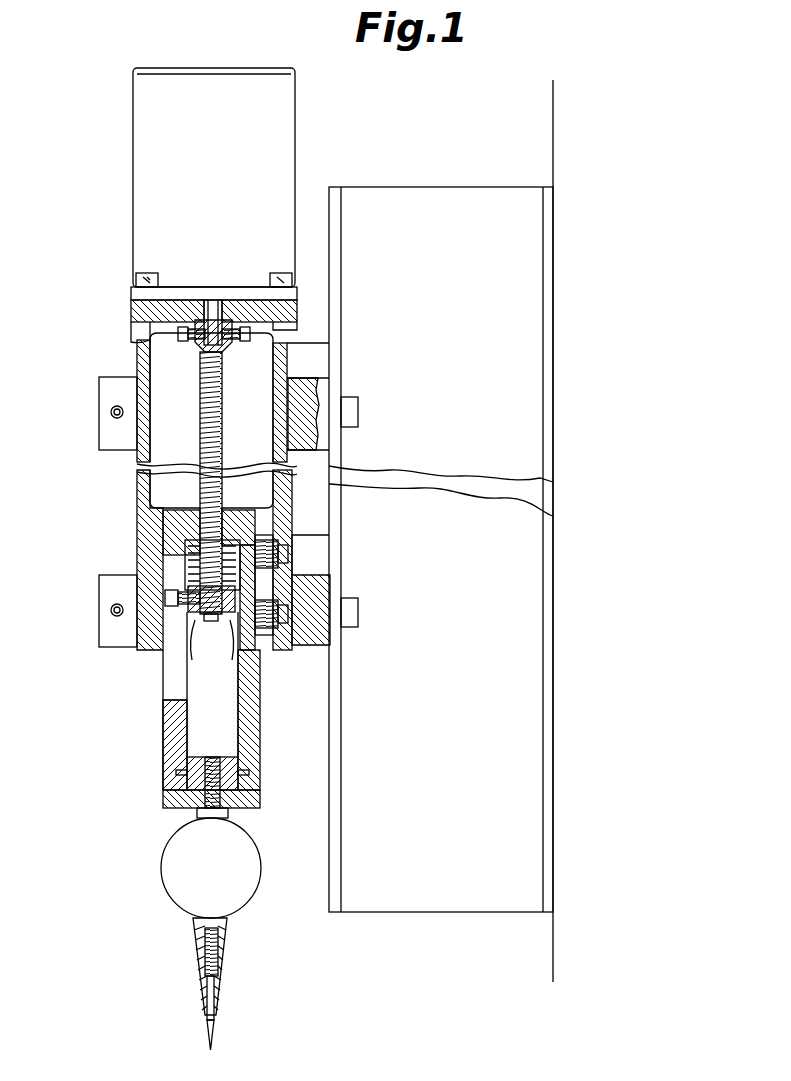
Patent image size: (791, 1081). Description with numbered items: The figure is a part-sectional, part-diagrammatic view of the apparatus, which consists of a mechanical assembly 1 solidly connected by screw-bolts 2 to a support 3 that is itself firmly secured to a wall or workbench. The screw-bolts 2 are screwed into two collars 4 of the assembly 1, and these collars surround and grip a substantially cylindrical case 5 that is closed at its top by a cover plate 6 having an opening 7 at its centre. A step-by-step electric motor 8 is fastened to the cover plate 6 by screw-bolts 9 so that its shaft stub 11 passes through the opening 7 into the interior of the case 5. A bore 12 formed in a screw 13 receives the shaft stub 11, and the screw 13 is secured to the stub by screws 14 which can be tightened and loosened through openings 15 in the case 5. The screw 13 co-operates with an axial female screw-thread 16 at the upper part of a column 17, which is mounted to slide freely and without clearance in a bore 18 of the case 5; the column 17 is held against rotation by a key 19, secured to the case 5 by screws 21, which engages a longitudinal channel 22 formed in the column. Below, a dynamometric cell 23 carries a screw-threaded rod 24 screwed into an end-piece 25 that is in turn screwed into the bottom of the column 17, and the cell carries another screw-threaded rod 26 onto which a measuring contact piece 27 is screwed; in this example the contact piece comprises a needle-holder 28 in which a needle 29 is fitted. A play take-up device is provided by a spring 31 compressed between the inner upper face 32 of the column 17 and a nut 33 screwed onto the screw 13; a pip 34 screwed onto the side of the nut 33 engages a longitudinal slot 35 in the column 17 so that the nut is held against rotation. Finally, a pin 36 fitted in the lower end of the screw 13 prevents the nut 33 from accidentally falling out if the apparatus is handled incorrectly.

The mechanical assembly 1 is at (90, 117).
The screw-bolts 2 is at (357, 408).
The support 3 is at (532, 377).
The collars 4 is at (113, 447).
The case 5 is at (122, 486).
The cover plate 6 is at (249, 300).
The opening 7 is at (228, 300).
The step-by-step electric motor 8 is at (293, 103).
The screw-bolts 9 is at (150, 277).
The shaft stub 11 is at (206, 300).
The bore 12 is at (226, 348).
The screw 13 is at (233, 436).
The screws 14 is at (182, 341).
The openings 15 is at (131, 340).
The axial female screw-thread 16 is at (232, 510).
The column 17 is at (154, 731).
The bore 18 is at (168, 530).
The key 19 is at (312, 580).
The screws 21 is at (280, 556).
The longitudinal channel 22 is at (258, 727).
The dynamometric cell 23 is at (197, 856).
The screw-threaded rod 24 is at (192, 806).
The end-piece 25 is at (260, 800).
The screw-threaded rod 26 is at (220, 962).
The measuring contact piece 27 is at (184, 1002).
The needle-holder 28 is at (222, 1002).
The needle 29 is at (213, 1036).
The spring 31 is at (258, 542).
The inner upper face 32 is at (171, 489).
The nut 33 is at (212, 613).
The pip 34 is at (172, 606).
The longitudinal slot 35 is at (174, 700).
The pin 36 is at (200, 618).